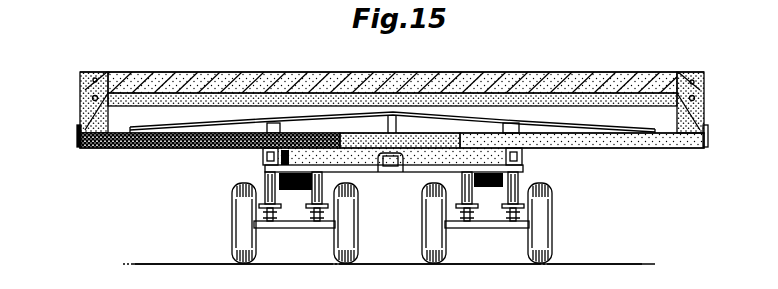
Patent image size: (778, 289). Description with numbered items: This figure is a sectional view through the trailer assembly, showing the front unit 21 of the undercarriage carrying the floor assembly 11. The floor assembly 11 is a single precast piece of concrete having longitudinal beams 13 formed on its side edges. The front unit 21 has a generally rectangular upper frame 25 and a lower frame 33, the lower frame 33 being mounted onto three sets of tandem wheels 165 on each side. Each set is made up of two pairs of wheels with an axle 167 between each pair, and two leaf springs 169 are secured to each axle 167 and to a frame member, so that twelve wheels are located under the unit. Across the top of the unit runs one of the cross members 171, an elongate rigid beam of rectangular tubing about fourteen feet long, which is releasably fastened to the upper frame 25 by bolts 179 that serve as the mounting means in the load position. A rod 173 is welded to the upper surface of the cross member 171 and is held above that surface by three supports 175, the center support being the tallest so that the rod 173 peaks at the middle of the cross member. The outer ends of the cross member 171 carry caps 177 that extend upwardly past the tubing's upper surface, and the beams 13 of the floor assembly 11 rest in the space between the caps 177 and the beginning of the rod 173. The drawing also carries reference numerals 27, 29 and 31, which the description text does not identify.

The front unit 21 is at (421, 50).
The floor assembly 11 is at (173, 72).
The longitudinal beams 13 is at (80, 107).
The upper frame 25 is at (318, 158).
The bracket 27 is at (520, 160).
The suspension strut 29 is at (516, 195).
The hanger 31 is at (395, 155).
The lower frame 33 is at (265, 168).
The tandem wheels 165 is at (545, 220).
The axle 167 is at (292, 230).
The leaf springs 169 is at (268, 200).
The cross members 171 is at (642, 150).
The rod 173 is at (560, 126).
The supports 175 is at (490, 124).
The caps 177 is at (77, 148).
The bolts 179 is at (268, 122).